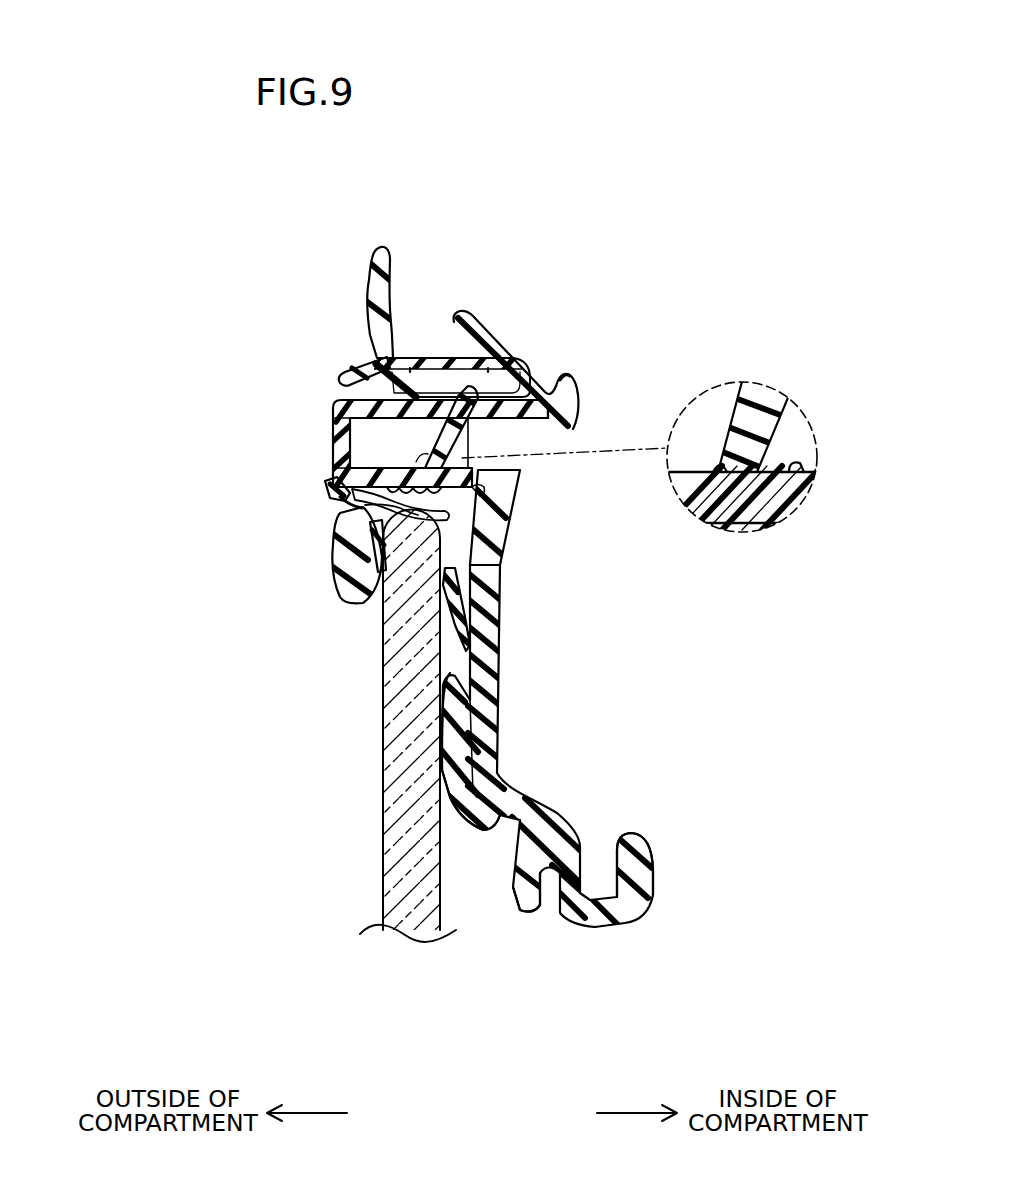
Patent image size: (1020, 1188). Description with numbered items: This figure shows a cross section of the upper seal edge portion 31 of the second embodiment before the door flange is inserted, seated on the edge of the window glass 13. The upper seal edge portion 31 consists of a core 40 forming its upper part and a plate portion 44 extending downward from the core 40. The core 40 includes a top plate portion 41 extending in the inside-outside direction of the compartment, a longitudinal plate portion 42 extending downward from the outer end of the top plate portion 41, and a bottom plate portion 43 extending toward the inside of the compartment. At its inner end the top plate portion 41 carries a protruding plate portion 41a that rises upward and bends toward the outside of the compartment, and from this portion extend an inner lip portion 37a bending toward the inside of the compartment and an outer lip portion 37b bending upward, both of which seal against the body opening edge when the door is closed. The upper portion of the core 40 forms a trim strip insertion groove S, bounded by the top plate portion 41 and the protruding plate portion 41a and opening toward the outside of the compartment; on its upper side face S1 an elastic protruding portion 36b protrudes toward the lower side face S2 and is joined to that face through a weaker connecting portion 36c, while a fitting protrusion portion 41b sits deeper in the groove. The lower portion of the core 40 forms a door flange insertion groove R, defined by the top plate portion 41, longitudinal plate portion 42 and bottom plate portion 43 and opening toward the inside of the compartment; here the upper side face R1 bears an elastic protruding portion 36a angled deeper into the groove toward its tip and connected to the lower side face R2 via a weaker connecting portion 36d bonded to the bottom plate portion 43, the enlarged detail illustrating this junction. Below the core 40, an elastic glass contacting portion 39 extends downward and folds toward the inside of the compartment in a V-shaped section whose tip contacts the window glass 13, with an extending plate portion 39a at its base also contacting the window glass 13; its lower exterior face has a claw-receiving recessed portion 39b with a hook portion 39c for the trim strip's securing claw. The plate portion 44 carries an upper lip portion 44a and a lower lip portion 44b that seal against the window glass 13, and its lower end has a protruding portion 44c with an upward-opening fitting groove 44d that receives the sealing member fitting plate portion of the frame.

The window glass 13 is at (382, 884).
The upper seal edge portion 31 is at (554, 429).
The protruding portion 36a is at (447, 453).
The protruding portion 36b is at (346, 368).
The connecting portion 36c is at (409, 443).
The connecting portion 36d is at (486, 490).
The inner lip portion 37a is at (462, 322).
The outer lip portion 37b is at (381, 248).
The glass contacting portion 39 is at (370, 600).
The extending plate portion 39a is at (506, 524).
The claw-receiving recessed portion 39b is at (343, 512).
The hook portion 39c is at (328, 492).
The core 40 is at (560, 480).
The top plate portion 41 is at (495, 323).
The protruding plate portion 41a is at (450, 358).
The fitting protrusion portion 41b is at (526, 383).
The longitudinal plate portion 42 is at (338, 444).
The bottom plate portion 43 is at (360, 505).
The plate portion 44 is at (519, 775).
The upper lip portion 44a is at (459, 581).
The lower lip portion 44b is at (451, 700).
The protruding portion 44c is at (626, 925).
The fitting groove 44d is at (641, 896).
The trim strip insertion groove S is at (360, 390).
The side face S1 is at (410, 358).
The side face S2 is at (488, 358).
The door flange insertion groove R is at (581, 412).
The side face R1 is at (570, 386).
The side face R2 is at (461, 470).